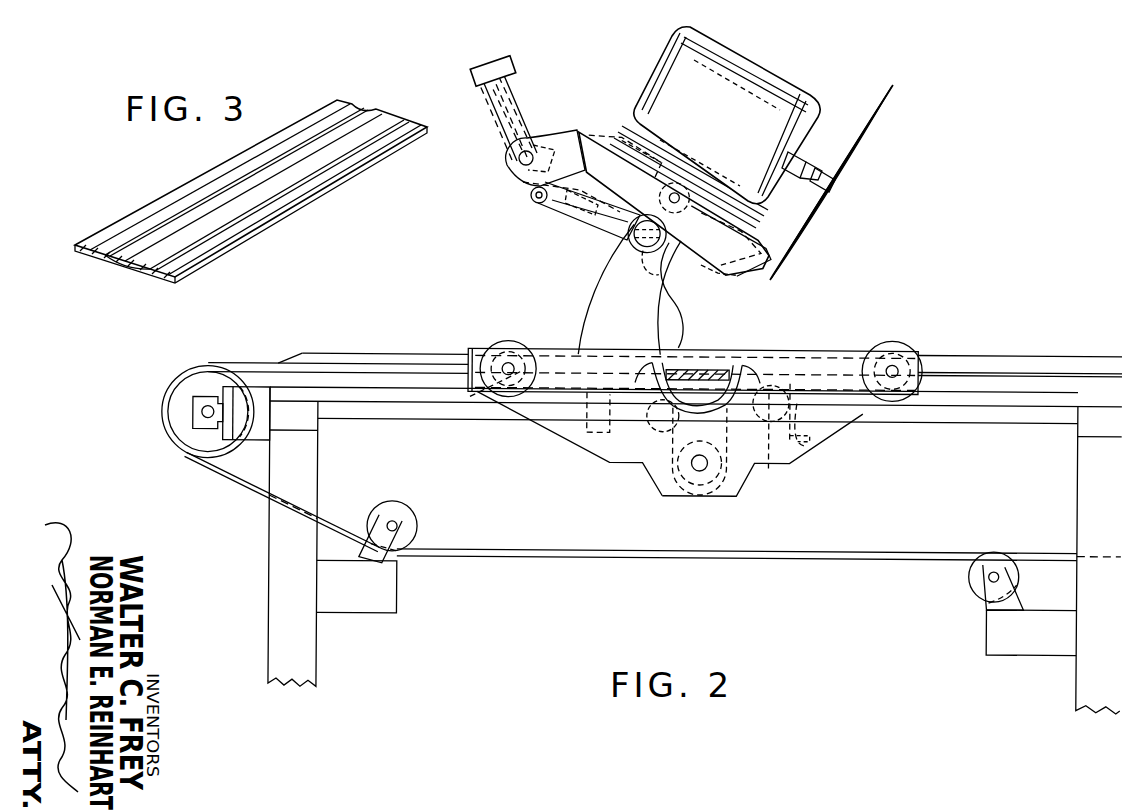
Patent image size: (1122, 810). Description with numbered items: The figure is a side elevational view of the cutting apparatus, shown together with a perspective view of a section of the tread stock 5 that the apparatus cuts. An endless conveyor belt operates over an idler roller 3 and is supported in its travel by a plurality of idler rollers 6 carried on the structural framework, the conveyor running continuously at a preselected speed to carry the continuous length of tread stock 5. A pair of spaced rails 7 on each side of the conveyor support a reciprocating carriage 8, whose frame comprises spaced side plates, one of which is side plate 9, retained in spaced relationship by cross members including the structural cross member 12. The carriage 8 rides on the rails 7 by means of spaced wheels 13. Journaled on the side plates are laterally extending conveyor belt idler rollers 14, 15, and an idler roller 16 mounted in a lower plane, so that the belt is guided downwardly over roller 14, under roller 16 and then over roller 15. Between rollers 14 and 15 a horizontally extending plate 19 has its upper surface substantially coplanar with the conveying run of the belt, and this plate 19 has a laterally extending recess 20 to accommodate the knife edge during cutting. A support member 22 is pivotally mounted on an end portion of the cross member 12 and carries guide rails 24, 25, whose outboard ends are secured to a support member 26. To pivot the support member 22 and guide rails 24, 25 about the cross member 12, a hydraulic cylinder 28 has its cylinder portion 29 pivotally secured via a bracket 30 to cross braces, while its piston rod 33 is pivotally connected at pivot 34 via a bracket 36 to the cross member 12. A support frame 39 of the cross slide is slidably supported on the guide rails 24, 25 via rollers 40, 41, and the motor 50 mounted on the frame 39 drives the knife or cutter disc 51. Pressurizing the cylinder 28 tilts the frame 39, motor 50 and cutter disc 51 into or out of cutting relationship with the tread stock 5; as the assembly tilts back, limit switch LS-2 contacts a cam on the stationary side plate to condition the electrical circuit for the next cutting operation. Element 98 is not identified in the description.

In FIG. 2, the idler roller 3 is at (190, 408).
In FIG. 3, the tread stock 5 is at (251, 191).
In FIG. 2, the tread stock 5 is at (653, 440).
In FIG. 2, the idler rollers 6 is at (691, 556).
In FIG. 2, the spaced rails 7 is at (671, 532).
In FIG. 2, the reciprocating carriage 8 is at (824, 305).
In FIG. 2, the side plate 9 is at (693, 355).
In FIG. 2, the structural cross member 12 is at (613, 252).
In FIG. 2, the spaced wheels 13 is at (693, 356).
In FIG. 2, the conveyor belt idler roller 14 is at (566, 433).
In FIG. 2, the conveyor belt idler roller 15 is at (789, 440).
In FIG. 2, the idler roller 16 is at (753, 458).
In FIG. 2, the horizontally extending plate 19 is at (698, 343).
In FIG. 2, the laterally extending recess 20 is at (700, 370).
In FIG. 2, the support member 22 is at (644, 289).
In FIG. 2, the guide rail 24 is at (662, 187).
In FIG. 2, the guide rail 25 is at (772, 241).
In FIG. 2, the support member 26 is at (677, 269).
In FIG. 2, the hydraulic cylinder 28 is at (416, 27).
In FIG. 2, the cylinder portion 29 is at (522, 101).
In FIG. 2, the bracket 30 is at (514, 150).
In FIG. 2, the piston rod 33 is at (531, 193).
In FIG. 2, the pivotal connection 34 is at (494, 209).
In FIG. 2, the bracket 36 is at (568, 230).
In FIG. 2, the support frame 39 is at (730, 210).
In FIG. 2, the roller 40 is at (612, 116).
In FIG. 2, the roller 41 is at (734, 286).
In FIG. 2, the motor 50 is at (722, 127).
In FIG. 2, the cutter disc 51 is at (848, 182).
In FIG. 2, the stop 98 is at (828, 438).
In FIG. 2, the limit switch LS-2 is at (539, 221).